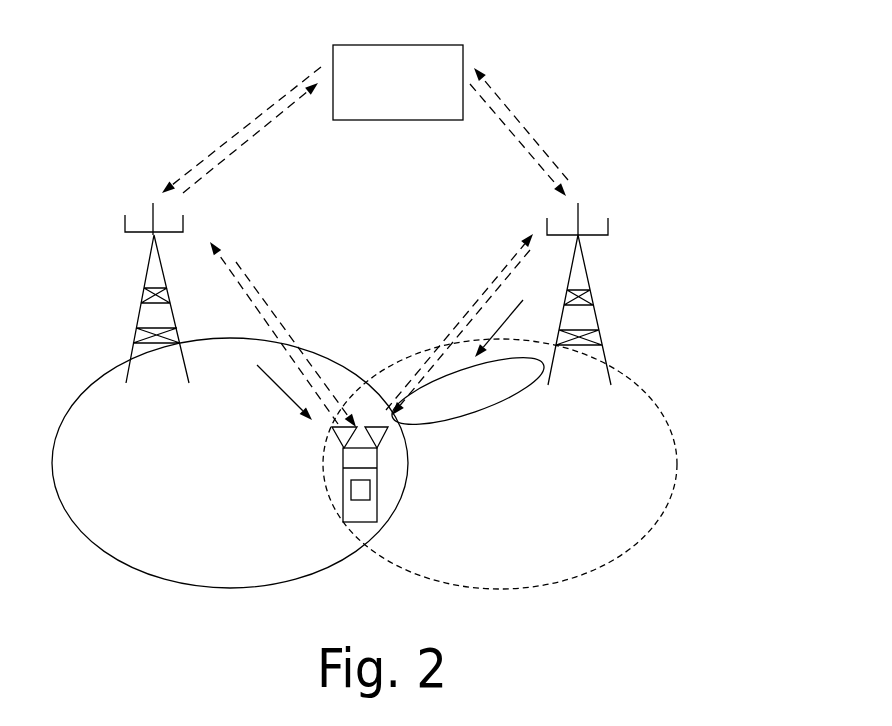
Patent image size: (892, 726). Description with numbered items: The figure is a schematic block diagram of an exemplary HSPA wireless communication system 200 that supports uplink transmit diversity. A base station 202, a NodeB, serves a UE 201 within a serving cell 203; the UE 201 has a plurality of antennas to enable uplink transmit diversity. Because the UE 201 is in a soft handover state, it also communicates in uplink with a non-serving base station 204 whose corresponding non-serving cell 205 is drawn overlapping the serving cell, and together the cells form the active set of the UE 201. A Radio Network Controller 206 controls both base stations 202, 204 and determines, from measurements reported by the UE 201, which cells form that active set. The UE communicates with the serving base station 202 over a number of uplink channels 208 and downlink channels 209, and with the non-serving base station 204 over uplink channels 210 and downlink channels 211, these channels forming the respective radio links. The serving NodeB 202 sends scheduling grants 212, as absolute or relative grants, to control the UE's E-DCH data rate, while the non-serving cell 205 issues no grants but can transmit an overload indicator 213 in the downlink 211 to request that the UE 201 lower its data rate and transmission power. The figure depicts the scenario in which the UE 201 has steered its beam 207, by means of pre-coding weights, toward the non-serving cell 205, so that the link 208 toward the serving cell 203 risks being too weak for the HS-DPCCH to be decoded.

The wireless communication system 200 is at (617, 98).
The UE 201 is at (352, 525).
The base station 202 is at (147, 222).
The serving cell 203 is at (153, 575).
The non-serving base station 204 is at (570, 223).
The non-serving cell 205 is at (613, 557).
The Radio Network Controller 206 is at (392, 120).
The beam 207 is at (497, 402).
The uplink channels 208 is at (259, 302).
The downlink channels 209 is at (258, 334).
The uplink channels 210 is at (462, 318).
The downlink channels 211 is at (497, 290).
The scheduling grants 212 is at (290, 400).
The overload indicator 213 is at (545, 337).